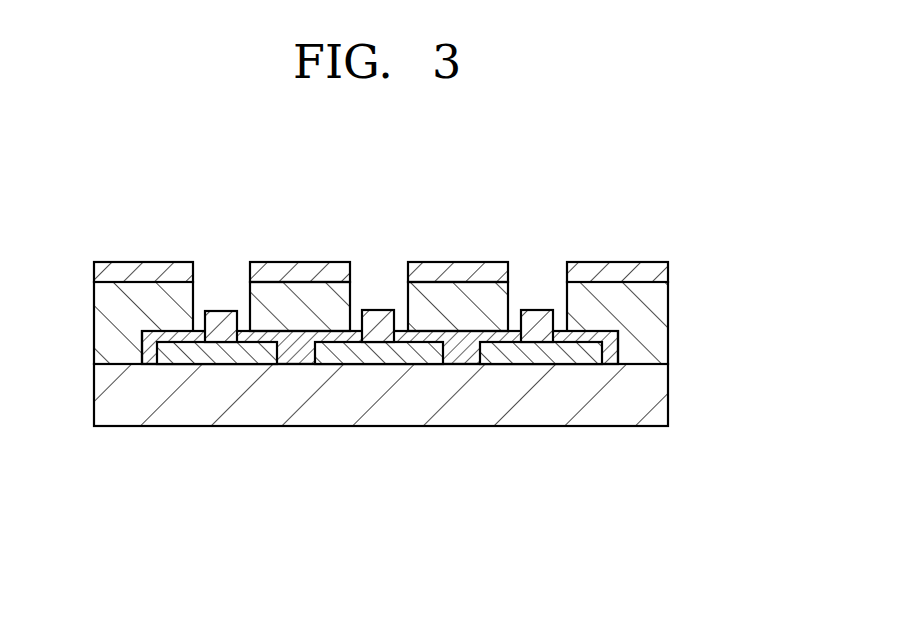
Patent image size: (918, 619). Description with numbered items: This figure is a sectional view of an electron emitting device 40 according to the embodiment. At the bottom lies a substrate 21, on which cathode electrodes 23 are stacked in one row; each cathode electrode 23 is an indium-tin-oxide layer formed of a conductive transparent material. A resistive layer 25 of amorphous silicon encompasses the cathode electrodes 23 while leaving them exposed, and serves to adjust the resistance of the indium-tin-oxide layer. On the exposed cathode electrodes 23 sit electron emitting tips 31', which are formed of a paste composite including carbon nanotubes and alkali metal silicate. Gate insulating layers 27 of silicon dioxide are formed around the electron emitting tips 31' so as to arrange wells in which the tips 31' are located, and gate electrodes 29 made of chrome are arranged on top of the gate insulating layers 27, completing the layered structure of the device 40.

The substrate 21 is at (652, 398).
The cathode electrode 23 is at (556, 336).
The resistive layer 25 is at (440, 346).
The gate insulating layer 27 is at (655, 325).
The gate electrode 29 is at (658, 278).
The electron emitting tip 31' is at (379, 280).
The device structure 40 is at (300, 473).